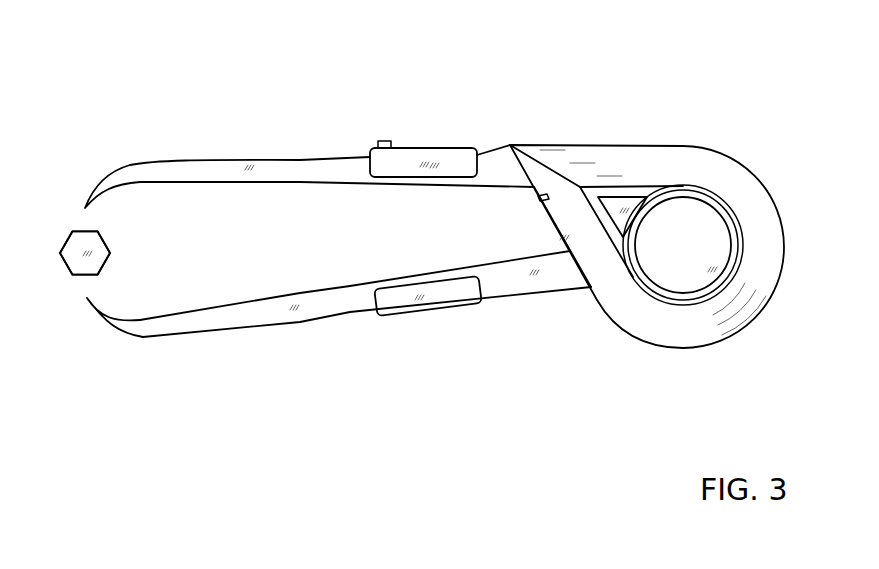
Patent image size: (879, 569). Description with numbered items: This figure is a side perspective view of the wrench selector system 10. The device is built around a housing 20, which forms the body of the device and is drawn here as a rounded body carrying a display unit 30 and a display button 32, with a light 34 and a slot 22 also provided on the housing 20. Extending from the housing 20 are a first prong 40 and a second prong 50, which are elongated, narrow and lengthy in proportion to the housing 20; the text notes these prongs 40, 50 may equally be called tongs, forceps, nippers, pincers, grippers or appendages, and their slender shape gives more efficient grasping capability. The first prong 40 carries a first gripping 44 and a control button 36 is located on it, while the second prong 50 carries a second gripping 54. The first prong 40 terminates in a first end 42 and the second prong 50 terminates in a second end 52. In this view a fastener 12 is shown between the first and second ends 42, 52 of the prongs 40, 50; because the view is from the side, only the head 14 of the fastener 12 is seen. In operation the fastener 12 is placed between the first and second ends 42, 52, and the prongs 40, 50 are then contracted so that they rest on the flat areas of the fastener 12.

The wrench selector system 10 is at (146, 87).
The fastener 12 is at (116, 265).
The head 14 is at (105, 245).
The housing 20 is at (752, 168).
The slot 22 is at (588, 288).
The display unit 30 is at (667, 270).
The display button 32 is at (633, 202).
The light 34 is at (539, 198).
The control button 36 is at (385, 140).
The first prong 40 is at (290, 158).
The first end 42 is at (88, 204).
The first gripping 44 is at (442, 147).
The second prong 50 is at (283, 322).
The second end 52 is at (88, 305).
The second gripping 54 is at (400, 315).